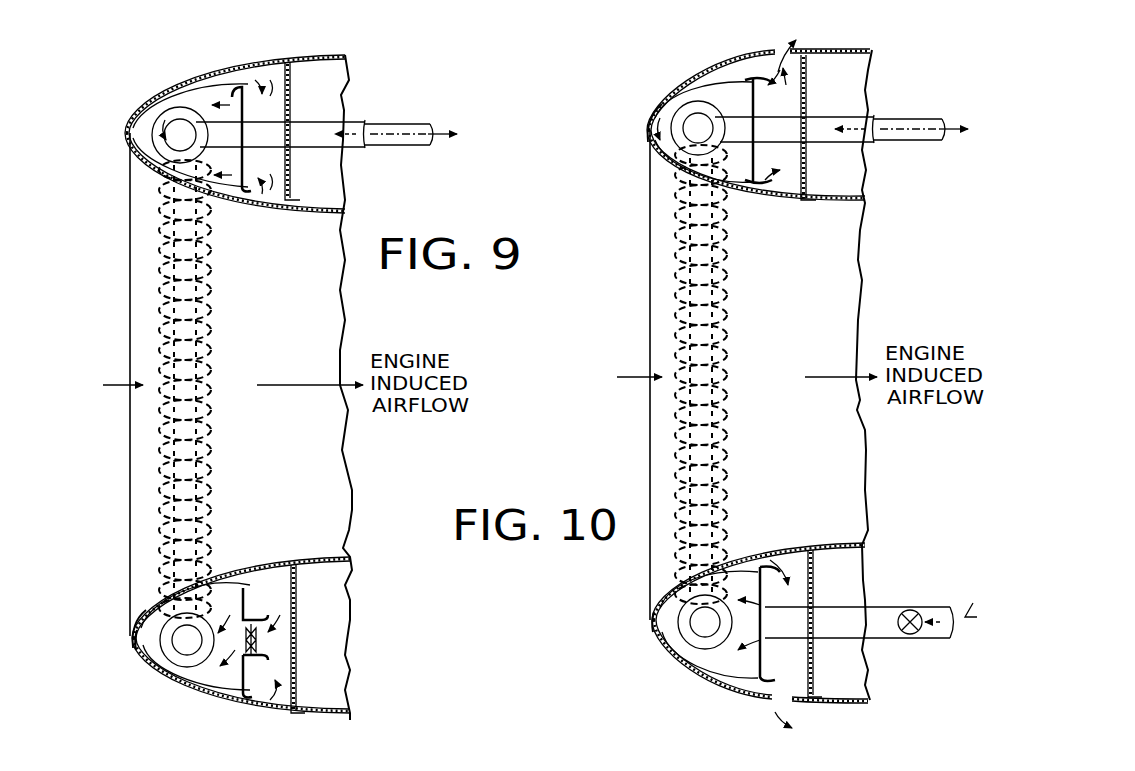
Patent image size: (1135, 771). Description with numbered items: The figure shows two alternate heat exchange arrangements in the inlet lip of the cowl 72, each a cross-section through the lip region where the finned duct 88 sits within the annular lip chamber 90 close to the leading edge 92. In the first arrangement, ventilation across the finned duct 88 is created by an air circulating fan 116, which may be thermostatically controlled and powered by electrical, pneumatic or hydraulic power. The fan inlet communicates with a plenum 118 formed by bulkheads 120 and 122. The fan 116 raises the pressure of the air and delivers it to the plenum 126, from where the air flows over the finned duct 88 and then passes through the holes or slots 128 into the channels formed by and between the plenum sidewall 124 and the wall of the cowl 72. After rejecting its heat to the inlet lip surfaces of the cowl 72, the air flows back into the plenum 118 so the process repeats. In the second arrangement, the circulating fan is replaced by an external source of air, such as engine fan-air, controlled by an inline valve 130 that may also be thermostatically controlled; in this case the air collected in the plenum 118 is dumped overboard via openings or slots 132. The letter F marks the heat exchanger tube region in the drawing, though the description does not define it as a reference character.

In FIG. 9, the cowl 72 is at (254, 705).
In FIG. 10, the cowl 72 is at (760, 682).
In FIG. 9, the finned duct 88 is at (212, 290).
In FIG. 10, the finned duct 88 is at (730, 270).
In FIG. 9, the annular lip chamber 90 is at (194, 78).
In FIG. 10, the annular lip chamber 90 is at (688, 655).
In FIG. 9, the leading edge 92 is at (132, 630).
In FIG. 10, the leading edge 92 is at (646, 128).
In FIG. 9, the air circulating fan 116 is at (324, 613).
In FIG. 9, the plenum 118 is at (292, 168).
In FIG. 10, the plenum 118 is at (812, 668).
In FIG. 9, the bulkhead 120 is at (130, 132).
In FIG. 10, the bulkhead 120 is at (805, 75).
In FIG. 9, the bulkhead 122 is at (243, 85).
In FIG. 10, the bulkhead 122 is at (752, 85).
In FIG. 9, the plenum sidewall 124 is at (240, 670).
In FIG. 9, the plenum 126 is at (232, 188).
In FIG. 10, the plenum 126 is at (722, 650).
In FIG. 9, the holes/slots 128 is at (136, 650).
In FIG. 10, the holes/slots 128 is at (652, 626).
In FIG. 10, the inline valve 130 is at (912, 608).
In FIG. 10, the openings or slots 132 is at (778, 58).
In FIG. 9, the fluid tube F is at (176, 115).
In FIG. 10, the fluid tube F is at (692, 110).